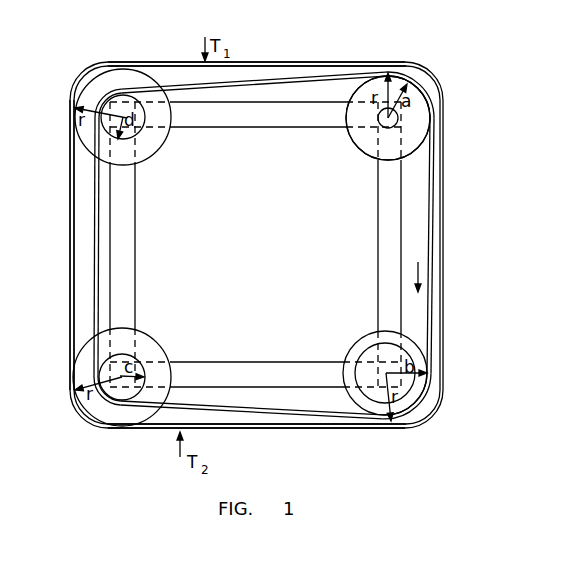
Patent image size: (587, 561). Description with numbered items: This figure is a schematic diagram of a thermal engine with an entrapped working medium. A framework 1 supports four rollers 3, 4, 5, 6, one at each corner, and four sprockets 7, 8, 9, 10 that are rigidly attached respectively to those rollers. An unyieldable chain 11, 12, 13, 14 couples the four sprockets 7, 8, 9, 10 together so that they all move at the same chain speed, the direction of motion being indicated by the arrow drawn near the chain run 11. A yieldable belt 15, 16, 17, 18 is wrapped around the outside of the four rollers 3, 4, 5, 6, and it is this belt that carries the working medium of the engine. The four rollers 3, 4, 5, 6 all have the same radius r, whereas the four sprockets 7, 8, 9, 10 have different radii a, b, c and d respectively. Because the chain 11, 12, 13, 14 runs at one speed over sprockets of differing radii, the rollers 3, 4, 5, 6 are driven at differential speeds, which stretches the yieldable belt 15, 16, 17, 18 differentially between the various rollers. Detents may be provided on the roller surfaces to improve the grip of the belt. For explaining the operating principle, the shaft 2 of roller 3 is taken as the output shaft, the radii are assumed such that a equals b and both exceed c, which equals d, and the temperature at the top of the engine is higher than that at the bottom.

The framework 1 is at (280, 128).
The shaft 2 is at (398, 119).
The roller 3 is at (370, 155).
The roller 4 is at (371, 334).
The roller 5 is at (139, 331).
The roller 6 is at (161, 146).
The sprocket 7 is at (353, 140).
The sprocket 8 is at (359, 358).
The sprocket 9 is at (138, 361).
The sprocket 10 is at (138, 132).
The unyieldable chain 11 is at (428, 227).
The unyieldable chain 12 is at (288, 404).
The unyieldable chain 13 is at (94, 221).
The unyieldable chain 14 is at (274, 86).
The yieldable belt 15 is at (443, 264).
The yieldable belt 16 is at (291, 429).
The yieldable belt 17 is at (70, 230).
The yieldable belt 18 is at (268, 61).